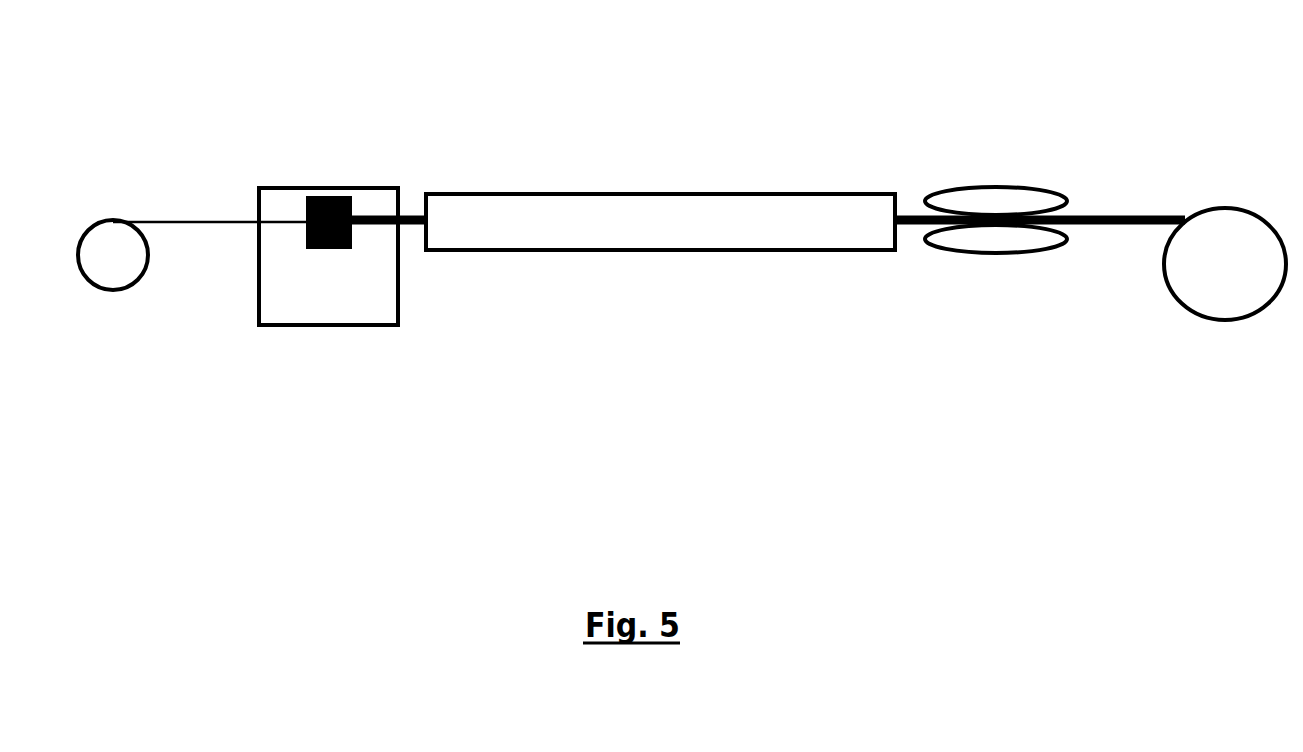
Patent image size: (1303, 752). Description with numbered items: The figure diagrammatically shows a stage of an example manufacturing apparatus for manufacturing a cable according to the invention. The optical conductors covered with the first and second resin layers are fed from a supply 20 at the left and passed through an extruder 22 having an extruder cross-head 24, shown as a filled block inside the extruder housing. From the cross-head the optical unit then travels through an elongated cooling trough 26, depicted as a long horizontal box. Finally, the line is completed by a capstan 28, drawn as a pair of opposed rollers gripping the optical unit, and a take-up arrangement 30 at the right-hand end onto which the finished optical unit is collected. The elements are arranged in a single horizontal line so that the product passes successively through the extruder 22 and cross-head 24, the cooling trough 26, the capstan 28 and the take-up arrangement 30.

The supply spool of core fiber 20 is at (117, 301).
The extruder 22 is at (351, 339).
The extruder cross-head 24 is at (359, 186).
The cooling trough 26 is at (720, 263).
The capstan 28 is at (1013, 274).
The take-up arrangement 30 is at (1230, 331).